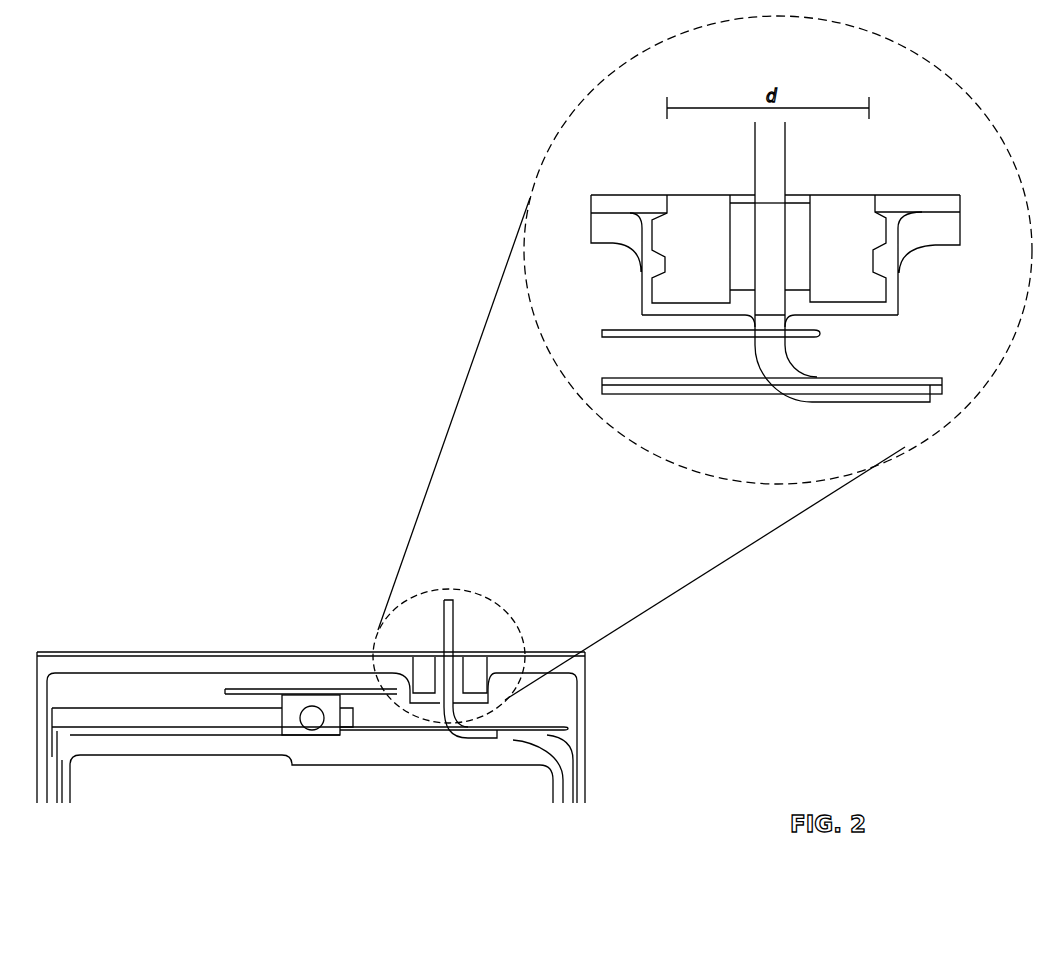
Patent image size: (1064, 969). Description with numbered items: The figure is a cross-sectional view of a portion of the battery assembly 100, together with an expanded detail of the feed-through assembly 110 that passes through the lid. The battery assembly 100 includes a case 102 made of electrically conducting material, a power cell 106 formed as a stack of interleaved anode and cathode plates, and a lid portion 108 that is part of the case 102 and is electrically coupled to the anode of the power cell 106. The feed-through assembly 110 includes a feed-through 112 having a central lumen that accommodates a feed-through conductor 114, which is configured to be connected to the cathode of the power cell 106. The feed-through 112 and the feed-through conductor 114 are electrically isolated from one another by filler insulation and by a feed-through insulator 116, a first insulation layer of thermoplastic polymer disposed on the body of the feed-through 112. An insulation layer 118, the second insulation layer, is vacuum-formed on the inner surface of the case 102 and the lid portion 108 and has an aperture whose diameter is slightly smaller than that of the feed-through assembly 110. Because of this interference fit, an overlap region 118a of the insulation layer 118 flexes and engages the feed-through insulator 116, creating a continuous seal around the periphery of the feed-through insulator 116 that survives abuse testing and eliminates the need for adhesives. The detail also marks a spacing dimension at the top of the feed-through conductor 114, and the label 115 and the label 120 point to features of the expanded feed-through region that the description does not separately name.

The battery assembly 100 is at (180, 151).
The case 102 is at (612, 708).
The power cell 106 is at (318, 791).
The lid portion 108 is at (283, 652).
The feed-through assembly 110 is at (554, 148).
The feed-through 112 is at (712, 195).
The feed-through conductor 114 is at (773, 153).
The gap 115 is at (750, 218).
The feed-through insulator 116 is at (870, 312).
The insulation layer 118 is at (147, 663).
The overlap region 118a is at (613, 235).
The attachment region 120 is at (860, 166).